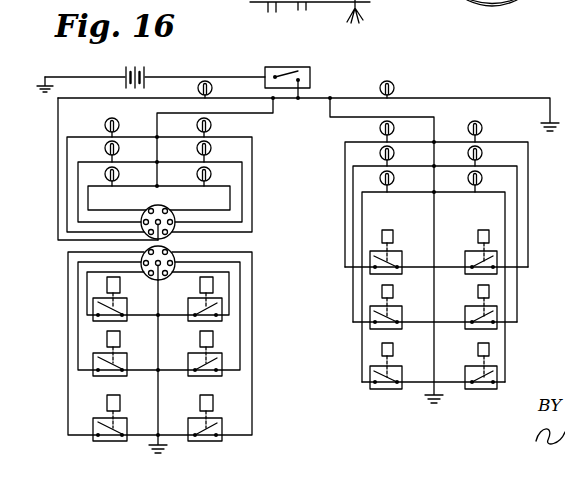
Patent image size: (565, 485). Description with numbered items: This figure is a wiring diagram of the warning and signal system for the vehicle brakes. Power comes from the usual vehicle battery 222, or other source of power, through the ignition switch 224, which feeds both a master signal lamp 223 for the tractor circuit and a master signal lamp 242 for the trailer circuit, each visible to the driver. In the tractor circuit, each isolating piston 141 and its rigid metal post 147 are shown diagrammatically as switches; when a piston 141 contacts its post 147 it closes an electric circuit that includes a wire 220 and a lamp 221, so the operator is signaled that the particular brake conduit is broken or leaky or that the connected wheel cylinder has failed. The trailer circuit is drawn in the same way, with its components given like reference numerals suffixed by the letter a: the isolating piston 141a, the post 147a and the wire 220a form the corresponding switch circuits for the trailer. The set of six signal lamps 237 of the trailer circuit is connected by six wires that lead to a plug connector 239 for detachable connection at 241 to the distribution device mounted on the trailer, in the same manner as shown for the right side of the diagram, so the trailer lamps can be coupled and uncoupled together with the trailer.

The vehicle battery 222 is at (148, 68).
The ignition switch 224 is at (306, 67).
The master signal lamp 242 is at (212, 88).
The master signal lamp 223 is at (394, 88).
The signal lamps 237 is at (226, 146).
The lamp 221 is at (380, 180).
The wire 220a is at (252, 201).
The wire 220 is at (362, 253).
The plug connector 239 is at (171, 235).
The detachable connection 241 is at (174, 262).
The isolating piston 141a is at (127, 306).
The rigid metal post 147a is at (98, 369).
The isolating piston 141 is at (465, 251).
The rigid metal post 147 is at (375, 322).